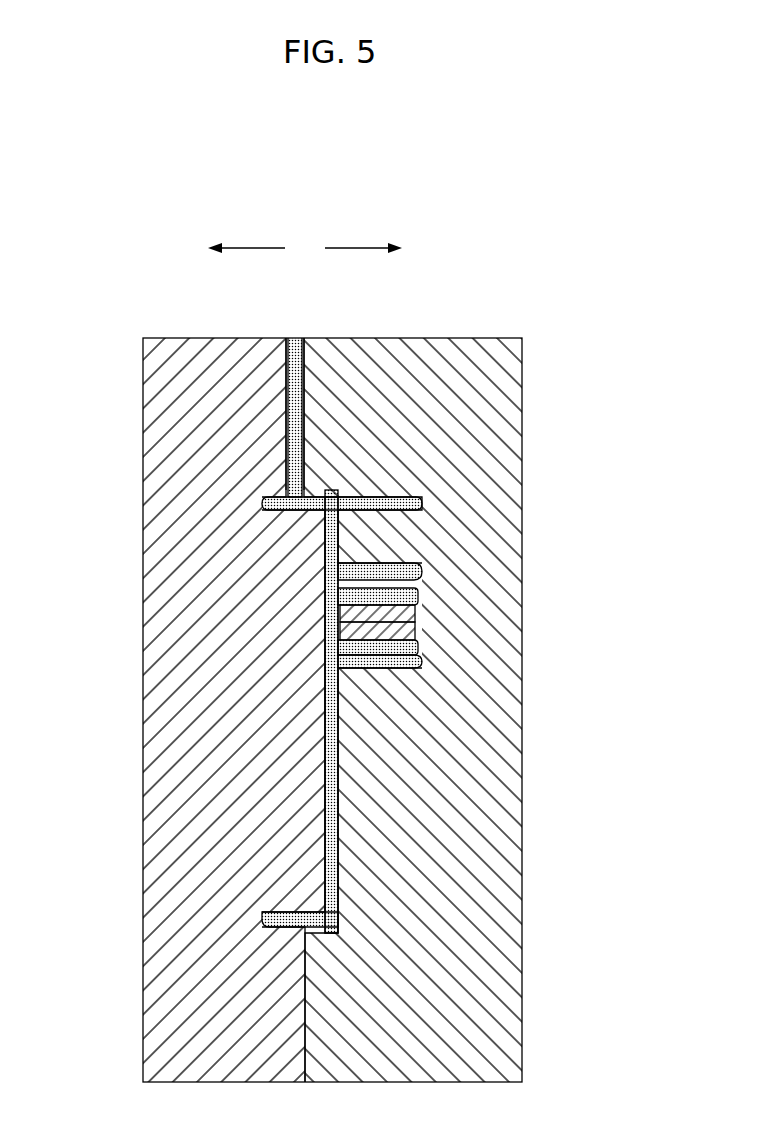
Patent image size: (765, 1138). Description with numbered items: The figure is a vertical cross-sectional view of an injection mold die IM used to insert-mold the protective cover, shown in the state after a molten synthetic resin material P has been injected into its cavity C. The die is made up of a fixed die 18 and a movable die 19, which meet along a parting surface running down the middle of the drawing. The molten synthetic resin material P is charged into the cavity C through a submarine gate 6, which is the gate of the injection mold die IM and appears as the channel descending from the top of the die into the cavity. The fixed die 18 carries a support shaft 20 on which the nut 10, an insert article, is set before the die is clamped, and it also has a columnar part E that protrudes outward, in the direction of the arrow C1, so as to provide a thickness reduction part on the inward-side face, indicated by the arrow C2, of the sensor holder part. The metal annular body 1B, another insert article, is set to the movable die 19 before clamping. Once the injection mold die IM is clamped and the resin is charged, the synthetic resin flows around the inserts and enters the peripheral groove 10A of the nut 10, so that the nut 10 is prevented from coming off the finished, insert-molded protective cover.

The injection mold die IM is at (482, 322).
The fixed die 18 is at (497, 383).
The movable die 19 is at (165, 462).
The molten synthetic resin material P is at (300, 443).
The submarine gate 6 is at (330, 490).
The metal annular body 1B is at (277, 490).
The cavity C is at (333, 648).
The columnar part E is at (378, 585).
The support shaft 20 is at (410, 606).
The nut 10 is at (395, 652).
The peripheral groove 10A is at (400, 662).
The arrow indicating outward direction C1 is at (246, 235).
The arrow indicating inward-side direction C2 is at (363, 235).